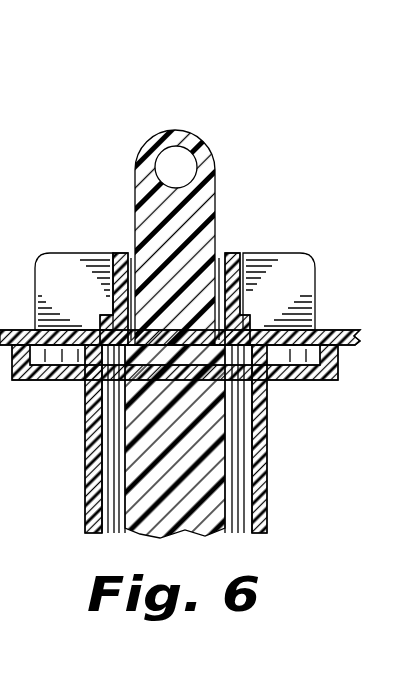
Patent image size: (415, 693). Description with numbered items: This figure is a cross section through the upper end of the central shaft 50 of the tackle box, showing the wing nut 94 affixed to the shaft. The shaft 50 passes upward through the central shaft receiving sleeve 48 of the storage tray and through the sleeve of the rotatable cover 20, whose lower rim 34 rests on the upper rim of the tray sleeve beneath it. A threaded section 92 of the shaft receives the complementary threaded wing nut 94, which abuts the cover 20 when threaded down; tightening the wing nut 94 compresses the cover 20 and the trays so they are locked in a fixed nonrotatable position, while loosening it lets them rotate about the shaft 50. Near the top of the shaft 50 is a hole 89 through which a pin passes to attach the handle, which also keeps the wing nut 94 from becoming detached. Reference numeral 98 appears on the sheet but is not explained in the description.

The rotatable cover 20 is at (345, 332).
The lower rim 34 is at (298, 380).
The central shaft receiving sleeve 48 is at (267, 462).
The central shaft 50 is at (205, 207).
The hole 89 is at (180, 160).
The threaded section 92 is at (243, 292).
The wing nut 94 is at (298, 305).
The sheet numeral 98 is at (403, 89).